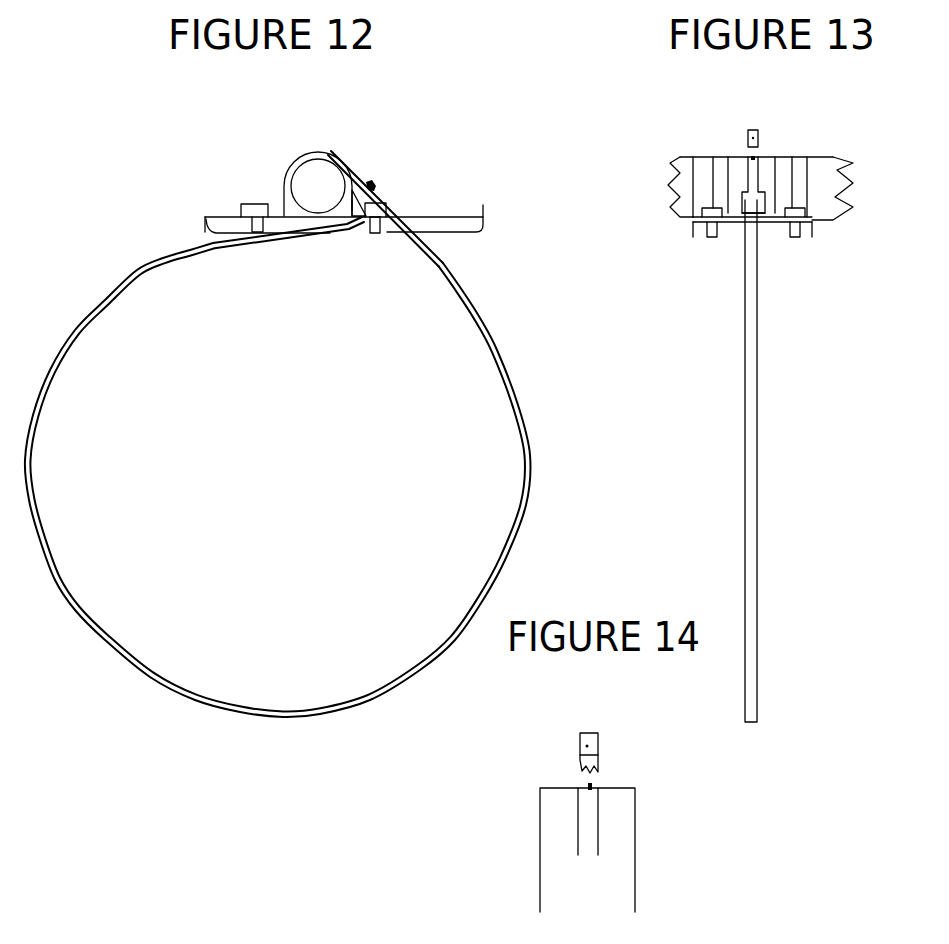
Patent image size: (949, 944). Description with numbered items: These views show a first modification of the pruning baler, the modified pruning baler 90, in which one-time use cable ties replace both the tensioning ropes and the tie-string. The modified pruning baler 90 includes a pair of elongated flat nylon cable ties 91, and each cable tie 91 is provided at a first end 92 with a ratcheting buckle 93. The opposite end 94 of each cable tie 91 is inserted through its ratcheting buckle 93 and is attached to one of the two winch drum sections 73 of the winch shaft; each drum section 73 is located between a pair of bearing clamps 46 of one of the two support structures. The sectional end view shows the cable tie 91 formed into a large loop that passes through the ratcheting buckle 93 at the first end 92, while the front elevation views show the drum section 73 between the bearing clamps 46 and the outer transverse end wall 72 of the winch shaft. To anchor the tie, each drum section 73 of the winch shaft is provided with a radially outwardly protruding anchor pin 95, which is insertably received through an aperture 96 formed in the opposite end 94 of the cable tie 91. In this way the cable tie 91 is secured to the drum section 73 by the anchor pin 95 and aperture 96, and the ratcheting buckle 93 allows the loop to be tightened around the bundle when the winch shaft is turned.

In FIG. 13, the bearing clamps 46 is at (700, 156).
In FIG. 13, the outer transverse end wall 72 is at (845, 213).
In FIG. 13, the winch drum section 73 is at (748, 158).
In FIG. 14, the winch drum section 73 is at (635, 865).
In FIG. 12, the modified pruning baler 90 is at (328, 157).
In FIG. 13, the modified pruning baler 90 is at (866, 125).
In FIG. 12, the cable tie 91 is at (163, 257).
In FIG. 13, the cable tie 91 is at (750, 157).
In FIG. 14, the cable tie 91 is at (582, 755).
In FIG. 12, the first end 92 is at (308, 233).
In FIG. 12, the ratcheting buckle 93 is at (377, 186).
In FIG. 12, the opposite end 94 is at (394, 265).
In FIG. 14, the opposite end 94 is at (588, 732).
In FIG. 12, the anchor pin 95 is at (250, 136).
In FIG. 13, the anchor pin 95 is at (760, 151).
In FIG. 14, the anchor pin 95 is at (592, 783).
In FIG. 13, the aperture 96 is at (757, 132).
In FIG. 14, the aperture 96 is at (586, 746).